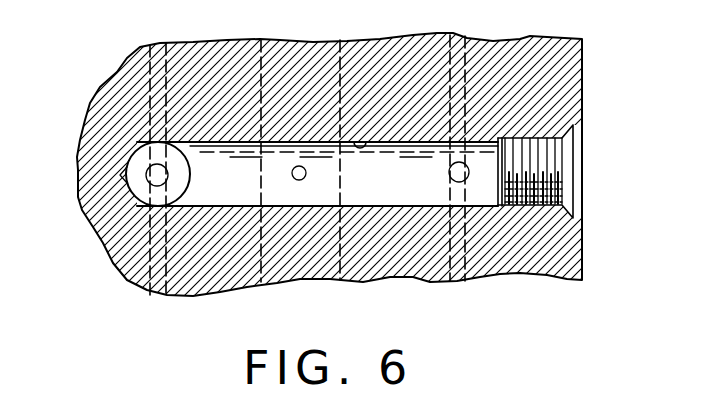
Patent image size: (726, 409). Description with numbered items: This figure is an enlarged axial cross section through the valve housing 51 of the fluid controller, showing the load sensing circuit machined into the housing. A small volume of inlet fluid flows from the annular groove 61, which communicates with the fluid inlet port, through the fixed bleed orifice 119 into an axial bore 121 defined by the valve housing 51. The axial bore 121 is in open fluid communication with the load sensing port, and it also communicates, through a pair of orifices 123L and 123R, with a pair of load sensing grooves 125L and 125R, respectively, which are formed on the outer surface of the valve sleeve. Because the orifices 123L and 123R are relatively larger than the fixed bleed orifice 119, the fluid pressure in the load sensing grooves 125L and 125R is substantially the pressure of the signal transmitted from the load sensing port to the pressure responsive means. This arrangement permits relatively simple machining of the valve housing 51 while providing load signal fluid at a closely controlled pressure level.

The valve housing 51 is at (565, 90).
The annular groove 61 is at (304, 80).
The fixed bleed orifice 119 is at (298, 166).
The axial bore 121 is at (367, 139).
The orifice 123L is at (168, 175).
The orifice 123R is at (449, 173).
The load sensing groove 125L is at (158, 43).
The load sensing groove 125R is at (460, 35).